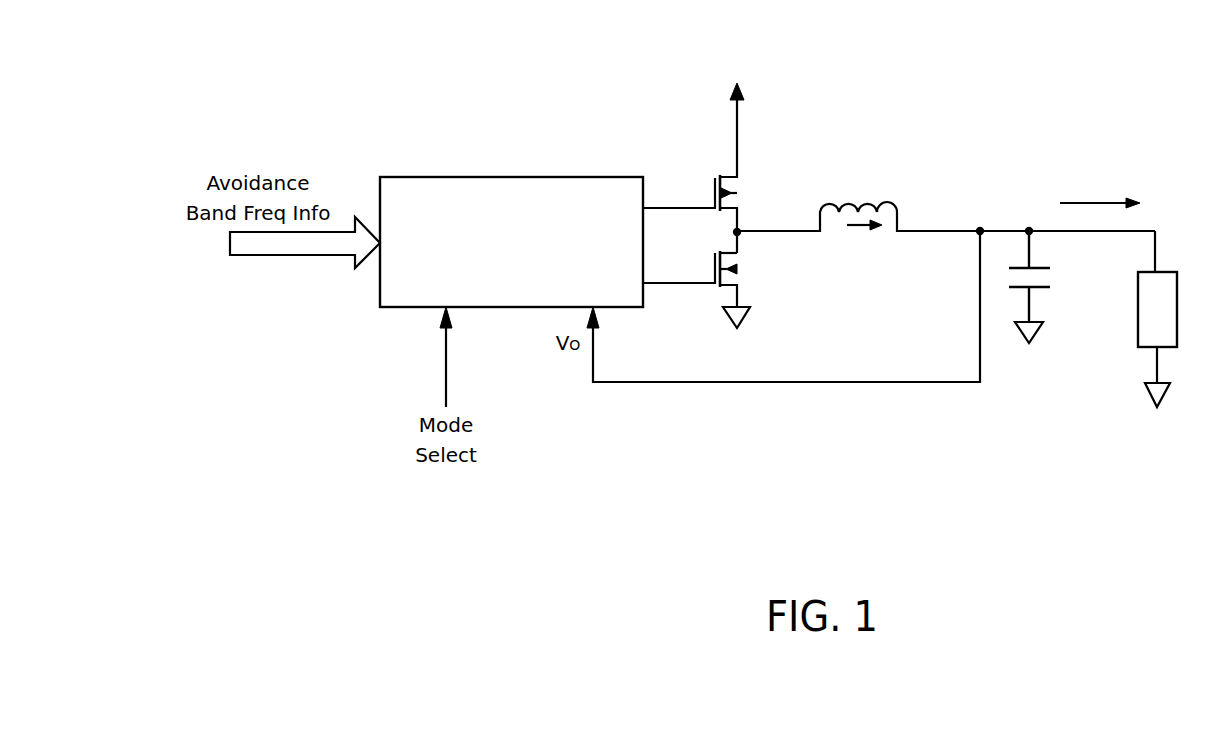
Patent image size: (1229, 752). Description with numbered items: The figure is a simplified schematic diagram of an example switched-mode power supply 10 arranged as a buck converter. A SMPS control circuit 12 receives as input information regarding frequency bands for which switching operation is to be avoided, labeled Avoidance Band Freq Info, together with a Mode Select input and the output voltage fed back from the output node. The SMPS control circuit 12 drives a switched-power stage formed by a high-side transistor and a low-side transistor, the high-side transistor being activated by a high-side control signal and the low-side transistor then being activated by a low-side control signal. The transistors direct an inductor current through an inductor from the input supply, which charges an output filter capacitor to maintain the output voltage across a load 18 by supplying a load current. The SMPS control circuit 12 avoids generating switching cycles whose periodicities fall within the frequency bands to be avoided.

The switched-mode power supply 10 is at (1072, 117).
The SMPS control circuit 12 is at (512, 177).
The load 18 is at (1177, 272).